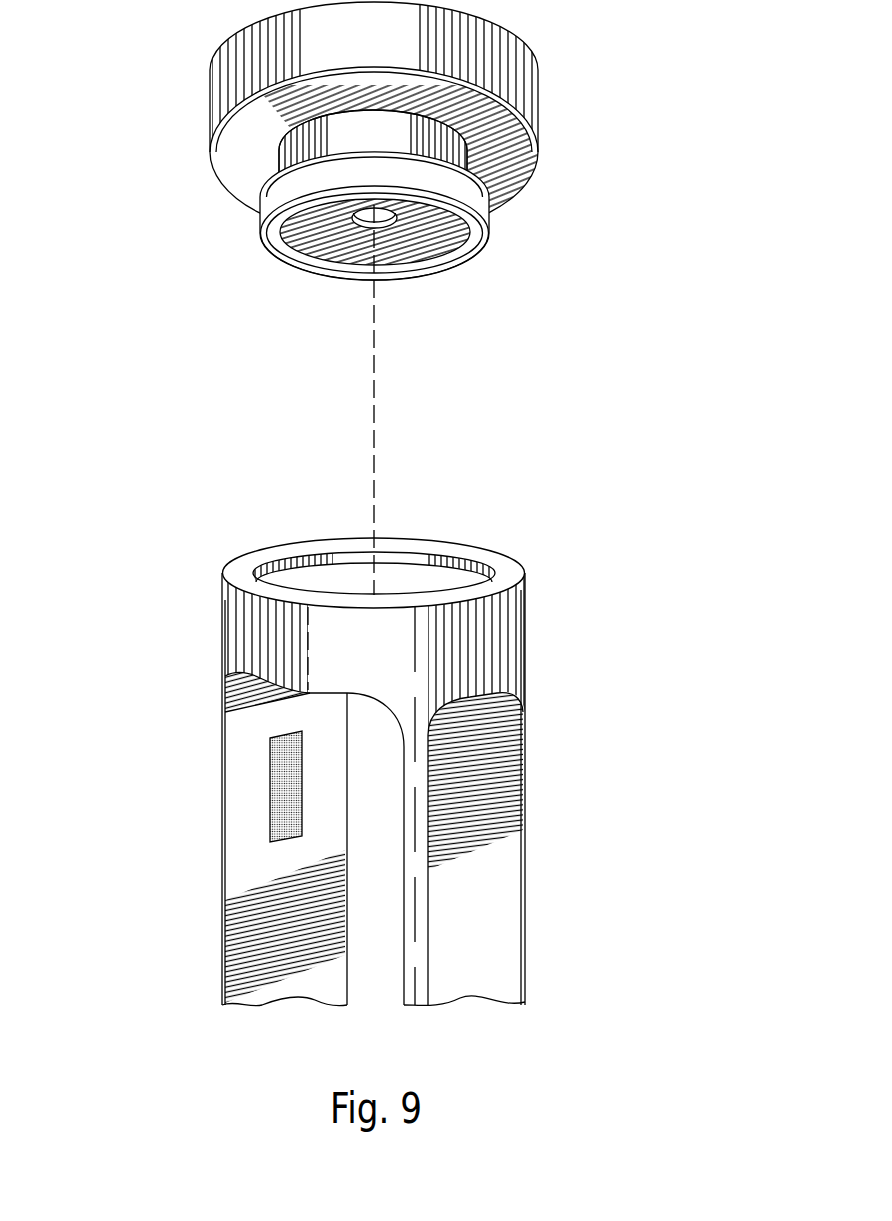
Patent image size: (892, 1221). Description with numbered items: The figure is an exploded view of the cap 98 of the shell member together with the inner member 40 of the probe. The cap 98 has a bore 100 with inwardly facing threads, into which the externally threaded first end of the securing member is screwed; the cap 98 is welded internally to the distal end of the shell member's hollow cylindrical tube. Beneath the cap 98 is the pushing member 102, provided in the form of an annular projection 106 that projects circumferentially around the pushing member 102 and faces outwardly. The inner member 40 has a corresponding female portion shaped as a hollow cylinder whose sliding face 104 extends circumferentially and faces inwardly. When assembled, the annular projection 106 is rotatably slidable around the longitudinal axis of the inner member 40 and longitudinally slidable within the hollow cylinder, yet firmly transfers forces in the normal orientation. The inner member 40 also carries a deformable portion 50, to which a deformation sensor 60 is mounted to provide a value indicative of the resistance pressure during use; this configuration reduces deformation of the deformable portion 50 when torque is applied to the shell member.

The cap 98 is at (558, 91).
The bore 100 is at (400, 232).
The pushing member 102 is at (259, 220).
The sliding face 104 is at (401, 583).
The annular projection 106 is at (483, 210).
The inner member 40 is at (495, 647).
The deformable portion 50 is at (492, 824).
The deformation sensor 60 is at (266, 807).